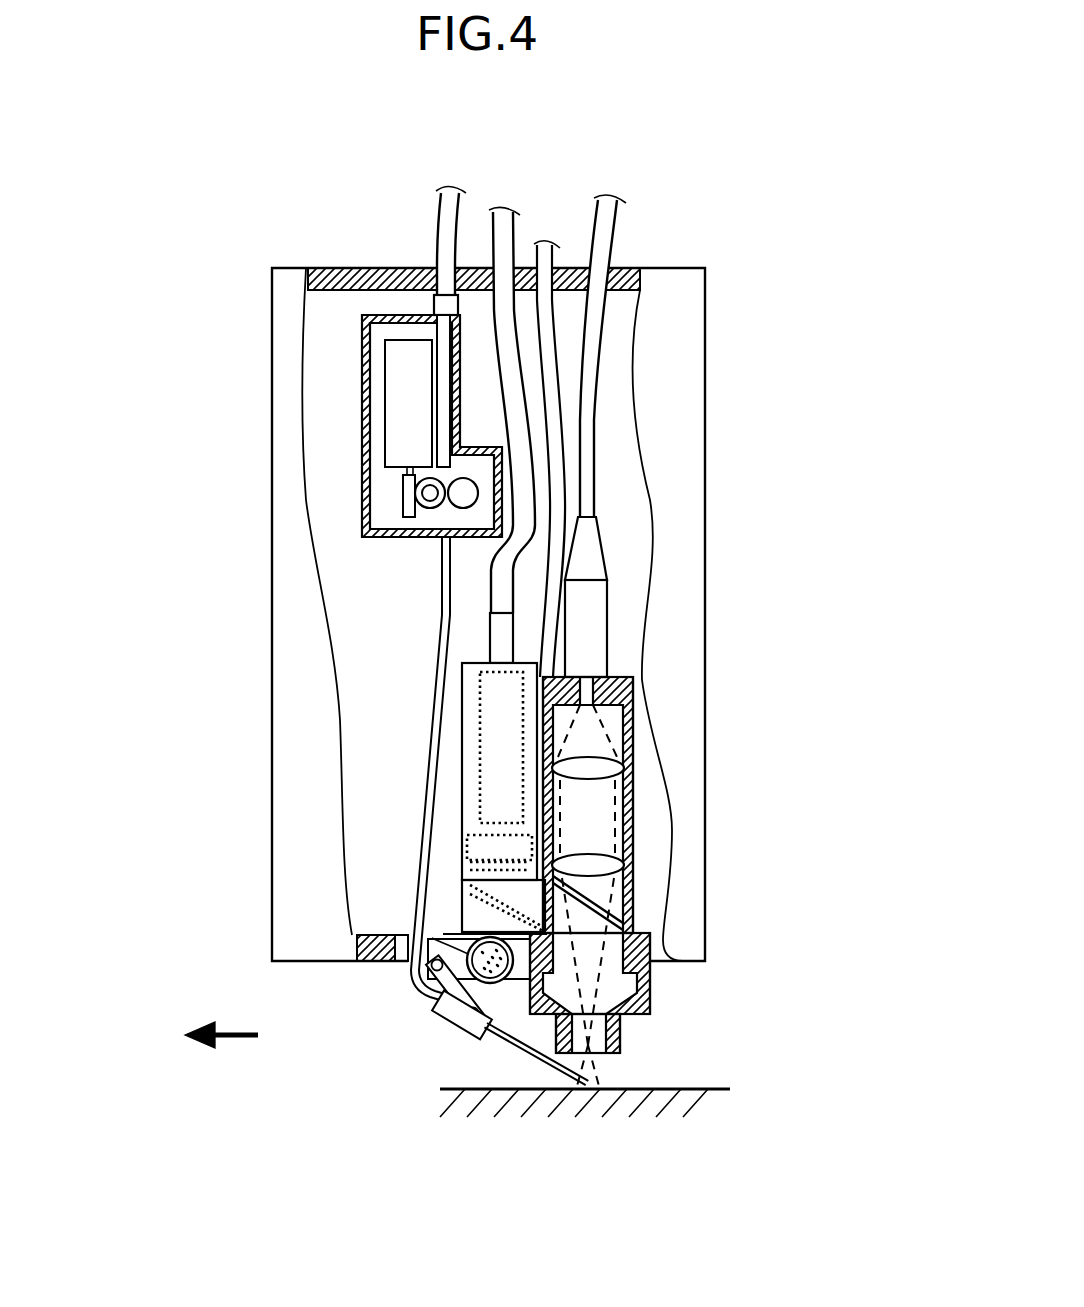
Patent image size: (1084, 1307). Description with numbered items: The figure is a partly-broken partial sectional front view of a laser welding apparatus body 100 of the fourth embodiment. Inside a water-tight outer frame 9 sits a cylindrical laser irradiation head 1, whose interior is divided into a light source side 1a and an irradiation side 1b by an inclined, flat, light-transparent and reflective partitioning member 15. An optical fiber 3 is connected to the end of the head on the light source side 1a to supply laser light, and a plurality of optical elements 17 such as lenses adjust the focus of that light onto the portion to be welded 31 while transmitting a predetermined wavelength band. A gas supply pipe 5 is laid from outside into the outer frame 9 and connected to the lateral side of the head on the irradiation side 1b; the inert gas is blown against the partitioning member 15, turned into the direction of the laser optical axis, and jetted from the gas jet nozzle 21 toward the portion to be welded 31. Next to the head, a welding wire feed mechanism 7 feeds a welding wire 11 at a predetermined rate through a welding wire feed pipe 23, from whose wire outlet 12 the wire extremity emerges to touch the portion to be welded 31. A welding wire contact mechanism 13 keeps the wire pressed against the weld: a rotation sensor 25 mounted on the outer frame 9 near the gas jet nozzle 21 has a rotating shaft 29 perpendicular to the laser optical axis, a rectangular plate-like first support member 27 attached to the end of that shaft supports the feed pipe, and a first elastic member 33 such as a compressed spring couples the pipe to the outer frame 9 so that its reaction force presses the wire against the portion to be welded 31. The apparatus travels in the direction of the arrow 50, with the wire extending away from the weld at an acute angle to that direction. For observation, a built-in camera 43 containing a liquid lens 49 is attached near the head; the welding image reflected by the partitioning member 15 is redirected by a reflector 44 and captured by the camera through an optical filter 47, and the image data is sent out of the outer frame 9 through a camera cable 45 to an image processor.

The laser welding apparatus body 100 is at (676, 219).
The outer frame 9 is at (705, 290).
The optical fiber 3 is at (588, 357).
The gas supply pipe 5 is at (548, 258).
The welding wire feed mechanism 7 is at (360, 367).
The camera cable 45 is at (503, 593).
The built-in camera 43 is at (362, 737).
The liquid lens 49 is at (460, 830).
The optical filter 47 is at (460, 867).
The reflector 44 is at (460, 900).
The rotating shaft 29 is at (440, 937).
The rotation sensor 25 is at (366, 855).
The welding wire feed pipe 23 is at (418, 998).
The first support member 27 is at (487, 1000).
The first elastic member 33 is at (447, 1024).
The welding wire contact mechanism 13 is at (458, 1056).
The arrow 50 is at (236, 1032).
The laser irradiation head 1 is at (648, 889).
The light source side 1a is at (617, 735).
The irradiation side 1b is at (617, 940).
The optical elements 17 is at (627, 775).
The partitioning member 15 is at (625, 883).
The gas jet nozzle 21 is at (622, 1048).
The wire outlet 12 is at (577, 1093).
The welding wire 11 is at (597, 1092).
The portion to be welded 31 is at (600, 1089).